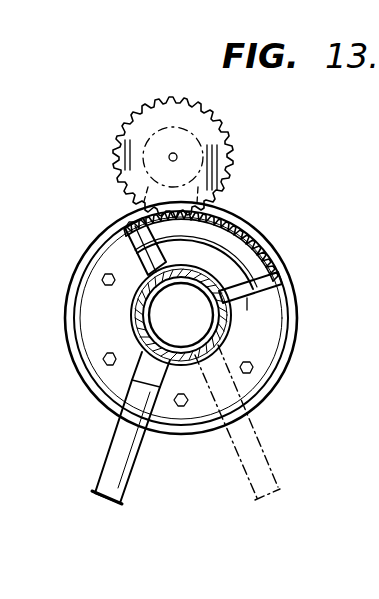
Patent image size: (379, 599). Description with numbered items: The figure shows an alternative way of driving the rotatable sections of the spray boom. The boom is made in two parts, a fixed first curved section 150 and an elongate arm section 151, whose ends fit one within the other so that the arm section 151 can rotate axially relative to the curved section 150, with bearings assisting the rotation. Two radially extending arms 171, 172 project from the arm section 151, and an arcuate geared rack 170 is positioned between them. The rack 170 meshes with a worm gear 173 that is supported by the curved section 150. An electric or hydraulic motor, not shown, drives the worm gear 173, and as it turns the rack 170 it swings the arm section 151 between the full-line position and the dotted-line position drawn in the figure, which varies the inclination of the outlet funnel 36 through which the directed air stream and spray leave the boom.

The outlet funnel 36 is at (243, 458).
The curved section 150 is at (297, 338).
The arm section 151 is at (128, 318).
The arcuate geared rack 170 is at (253, 229).
The radially extending arm 171 is at (143, 260).
The radially extending arm 172 is at (247, 310).
The worm gear 173 is at (228, 163).